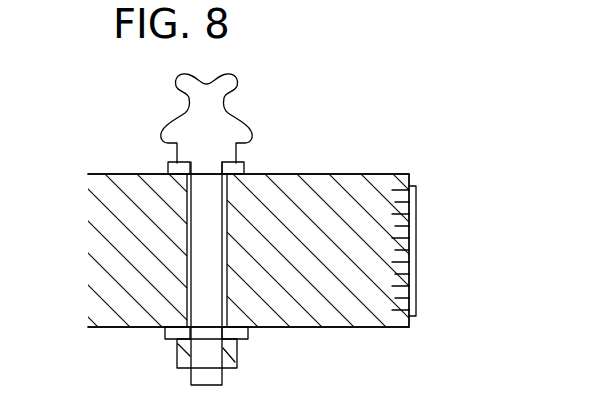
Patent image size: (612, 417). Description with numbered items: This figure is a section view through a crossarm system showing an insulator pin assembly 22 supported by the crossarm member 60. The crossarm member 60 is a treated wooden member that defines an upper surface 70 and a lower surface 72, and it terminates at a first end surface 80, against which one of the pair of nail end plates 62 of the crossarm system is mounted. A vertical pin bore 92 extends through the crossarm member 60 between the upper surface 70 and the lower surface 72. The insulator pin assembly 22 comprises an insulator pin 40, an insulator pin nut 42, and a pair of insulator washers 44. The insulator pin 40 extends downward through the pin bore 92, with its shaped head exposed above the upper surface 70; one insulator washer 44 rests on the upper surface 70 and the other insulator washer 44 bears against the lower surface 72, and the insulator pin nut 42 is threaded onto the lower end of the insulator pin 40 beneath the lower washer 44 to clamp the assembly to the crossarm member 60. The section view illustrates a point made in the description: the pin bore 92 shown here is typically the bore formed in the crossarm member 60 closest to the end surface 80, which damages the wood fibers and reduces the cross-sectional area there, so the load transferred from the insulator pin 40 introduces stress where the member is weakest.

The insulator pin assembly 22 is at (156, 84).
The insulator pin 40 is at (187, 130).
The insulator pin nut 42 is at (182, 352).
The insulator washers 44 is at (173, 167).
The crossarm member 60 is at (305, 188).
The nail end plate 62 is at (419, 211).
The upper surface 70 is at (347, 174).
The lower surface 72 is at (333, 327).
The first end surface 80 is at (410, 323).
The pin bore 92 is at (227, 228).